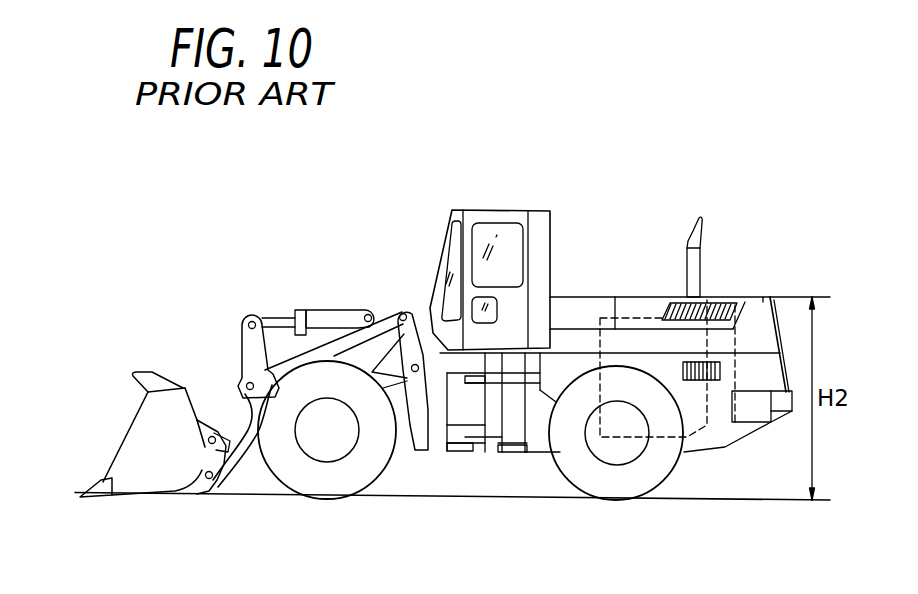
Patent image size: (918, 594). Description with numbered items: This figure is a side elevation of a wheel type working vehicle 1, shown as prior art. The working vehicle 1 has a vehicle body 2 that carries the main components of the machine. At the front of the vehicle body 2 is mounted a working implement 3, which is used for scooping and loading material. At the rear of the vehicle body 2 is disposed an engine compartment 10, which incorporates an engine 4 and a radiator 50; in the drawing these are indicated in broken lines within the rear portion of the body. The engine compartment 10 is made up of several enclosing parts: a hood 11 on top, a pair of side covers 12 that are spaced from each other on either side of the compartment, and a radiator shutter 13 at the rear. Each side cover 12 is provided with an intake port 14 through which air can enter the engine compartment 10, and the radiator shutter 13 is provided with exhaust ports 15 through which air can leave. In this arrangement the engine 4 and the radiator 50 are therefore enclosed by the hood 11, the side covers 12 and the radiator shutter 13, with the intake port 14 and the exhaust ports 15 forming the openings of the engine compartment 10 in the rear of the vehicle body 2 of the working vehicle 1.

The working vehicle 1 is at (447, 152).
The vehicle body 2 is at (512, 428).
The working implement 3 is at (333, 352).
The engine 4 is at (633, 315).
The engine compartment 10 is at (716, 419).
The hood 11 is at (673, 293).
The side covers 12 is at (677, 343).
The radiator shutter 13 is at (775, 328).
The intake port 14 is at (727, 297).
The exhaust ports 15 is at (780, 356).
The radiator 50 is at (753, 420).